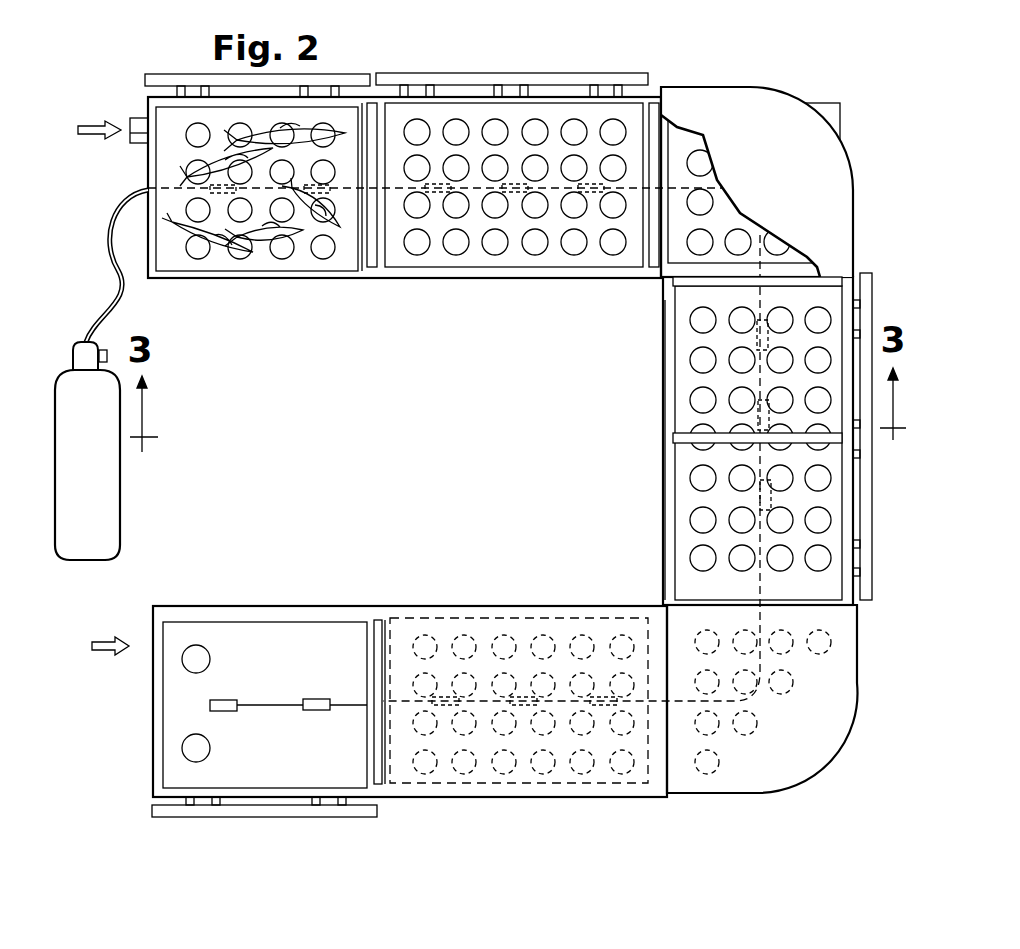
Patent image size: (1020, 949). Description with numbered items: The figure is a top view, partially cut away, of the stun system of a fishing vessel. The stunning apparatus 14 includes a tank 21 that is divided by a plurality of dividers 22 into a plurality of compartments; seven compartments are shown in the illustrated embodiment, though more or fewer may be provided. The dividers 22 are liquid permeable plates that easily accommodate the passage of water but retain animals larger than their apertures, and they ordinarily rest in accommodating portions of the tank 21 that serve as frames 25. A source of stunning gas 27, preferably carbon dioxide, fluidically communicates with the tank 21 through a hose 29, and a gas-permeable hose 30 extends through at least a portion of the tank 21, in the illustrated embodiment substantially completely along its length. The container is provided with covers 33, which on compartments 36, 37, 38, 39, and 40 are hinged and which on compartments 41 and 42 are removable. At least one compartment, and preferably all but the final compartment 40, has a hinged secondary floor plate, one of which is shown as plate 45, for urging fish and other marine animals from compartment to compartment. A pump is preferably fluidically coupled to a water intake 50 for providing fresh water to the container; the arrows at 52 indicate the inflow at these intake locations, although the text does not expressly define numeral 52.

The stunning apparatus 14 is at (727, 48).
The tank 21 is at (490, 272).
The dividers 22 is at (372, 270).
The frames 25 is at (383, 275).
The source of stunning gas 27 is at (110, 502).
The hose 29 is at (112, 308).
The gas-permeable hose 30 is at (175, 188).
The covers 33 is at (345, 73).
The compartment 36 is at (302, 262).
The compartment 37 is at (555, 252).
The compartment 38 is at (690, 465).
The compartment 39 is at (505, 635).
The final compartment 40 is at (275, 640).
The compartment 41 is at (695, 98).
The compartment 42 is at (803, 735).
The hinged secondary floor plate 45 is at (175, 262).
The water intake 50 is at (137, 118).
The flow direction 52 is at (100, 122).